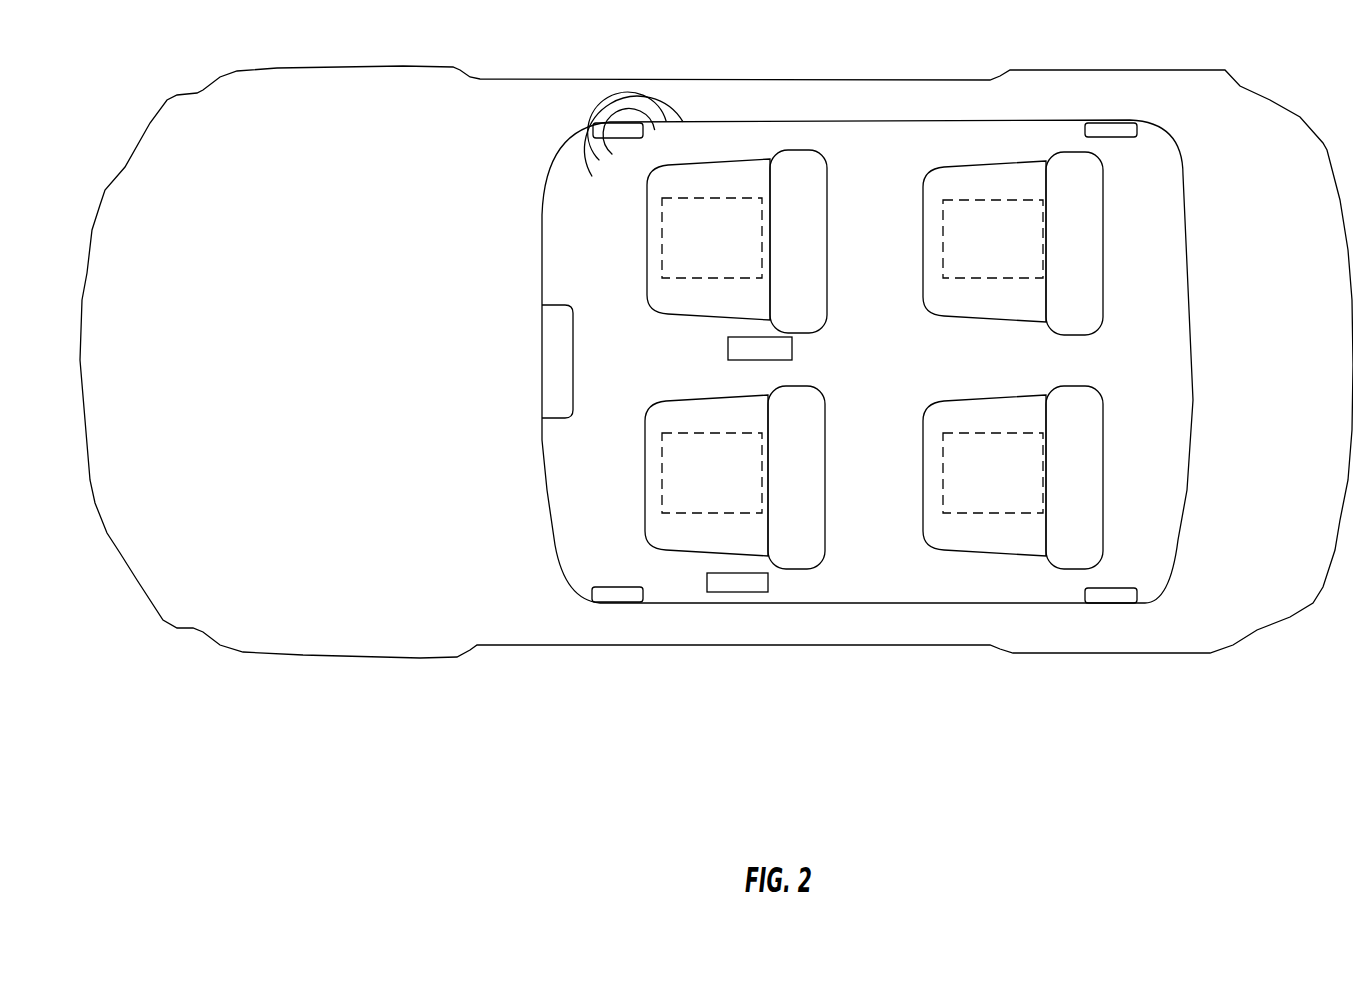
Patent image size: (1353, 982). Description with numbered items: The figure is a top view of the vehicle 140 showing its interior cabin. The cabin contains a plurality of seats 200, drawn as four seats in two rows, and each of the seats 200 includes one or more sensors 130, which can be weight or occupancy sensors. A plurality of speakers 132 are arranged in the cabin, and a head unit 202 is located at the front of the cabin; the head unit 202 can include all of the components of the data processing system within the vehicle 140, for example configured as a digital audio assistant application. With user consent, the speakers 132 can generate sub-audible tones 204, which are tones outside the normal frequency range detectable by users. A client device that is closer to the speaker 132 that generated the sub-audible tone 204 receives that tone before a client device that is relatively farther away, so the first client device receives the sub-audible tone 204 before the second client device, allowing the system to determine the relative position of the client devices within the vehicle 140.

The vehicle 140 is at (1230, 78).
The speaker 132 is at (620, 124).
The sub-audible tone 204 is at (617, 205).
The head unit 202 is at (553, 356).
The seat 200 is at (823, 230).
The sensor 130 is at (852, 355).